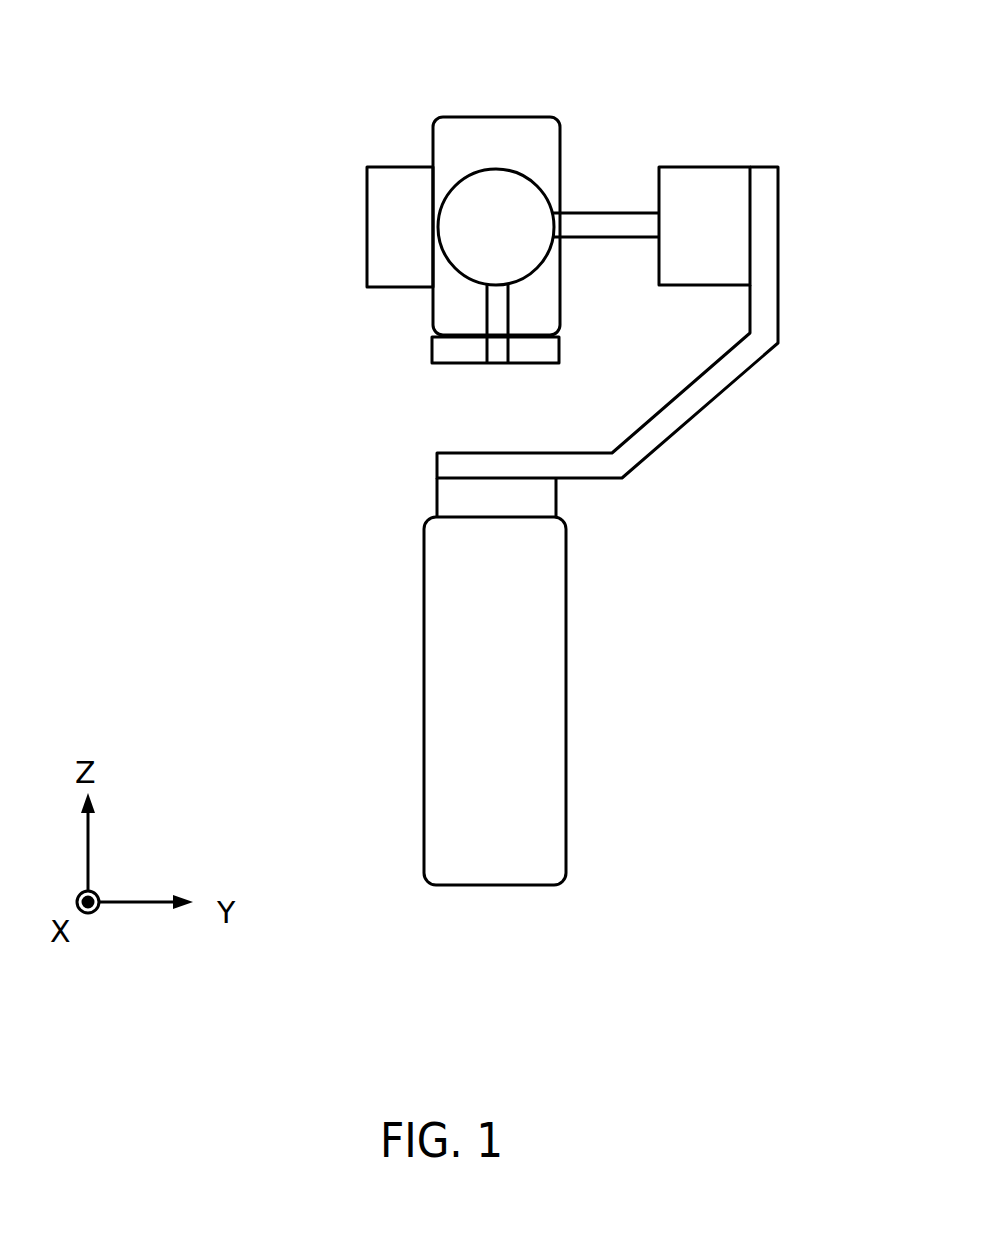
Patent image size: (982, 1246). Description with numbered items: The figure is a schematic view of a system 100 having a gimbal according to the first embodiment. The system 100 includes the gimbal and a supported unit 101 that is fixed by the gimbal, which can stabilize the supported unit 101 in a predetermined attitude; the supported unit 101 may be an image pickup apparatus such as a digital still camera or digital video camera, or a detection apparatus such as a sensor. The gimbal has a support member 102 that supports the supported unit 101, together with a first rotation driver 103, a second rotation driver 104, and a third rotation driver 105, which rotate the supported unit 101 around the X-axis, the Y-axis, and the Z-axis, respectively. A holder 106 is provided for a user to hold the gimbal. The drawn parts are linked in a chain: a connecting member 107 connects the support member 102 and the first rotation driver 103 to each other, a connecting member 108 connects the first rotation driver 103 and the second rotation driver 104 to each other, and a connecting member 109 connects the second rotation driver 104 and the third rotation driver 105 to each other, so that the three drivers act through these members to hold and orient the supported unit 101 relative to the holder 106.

The system 100 is at (592, 981).
The supported unit 101 is at (478, 157).
The support member 102 is at (442, 351).
The first rotation driver 103 is at (503, 188).
The second rotation driver 104 is at (721, 198).
The third rotation driver 105 is at (473, 495).
The holder 106 is at (508, 748).
The connecting member 107 is at (497, 348).
The connecting member 108 is at (598, 222).
The connecting member 109 is at (715, 388).